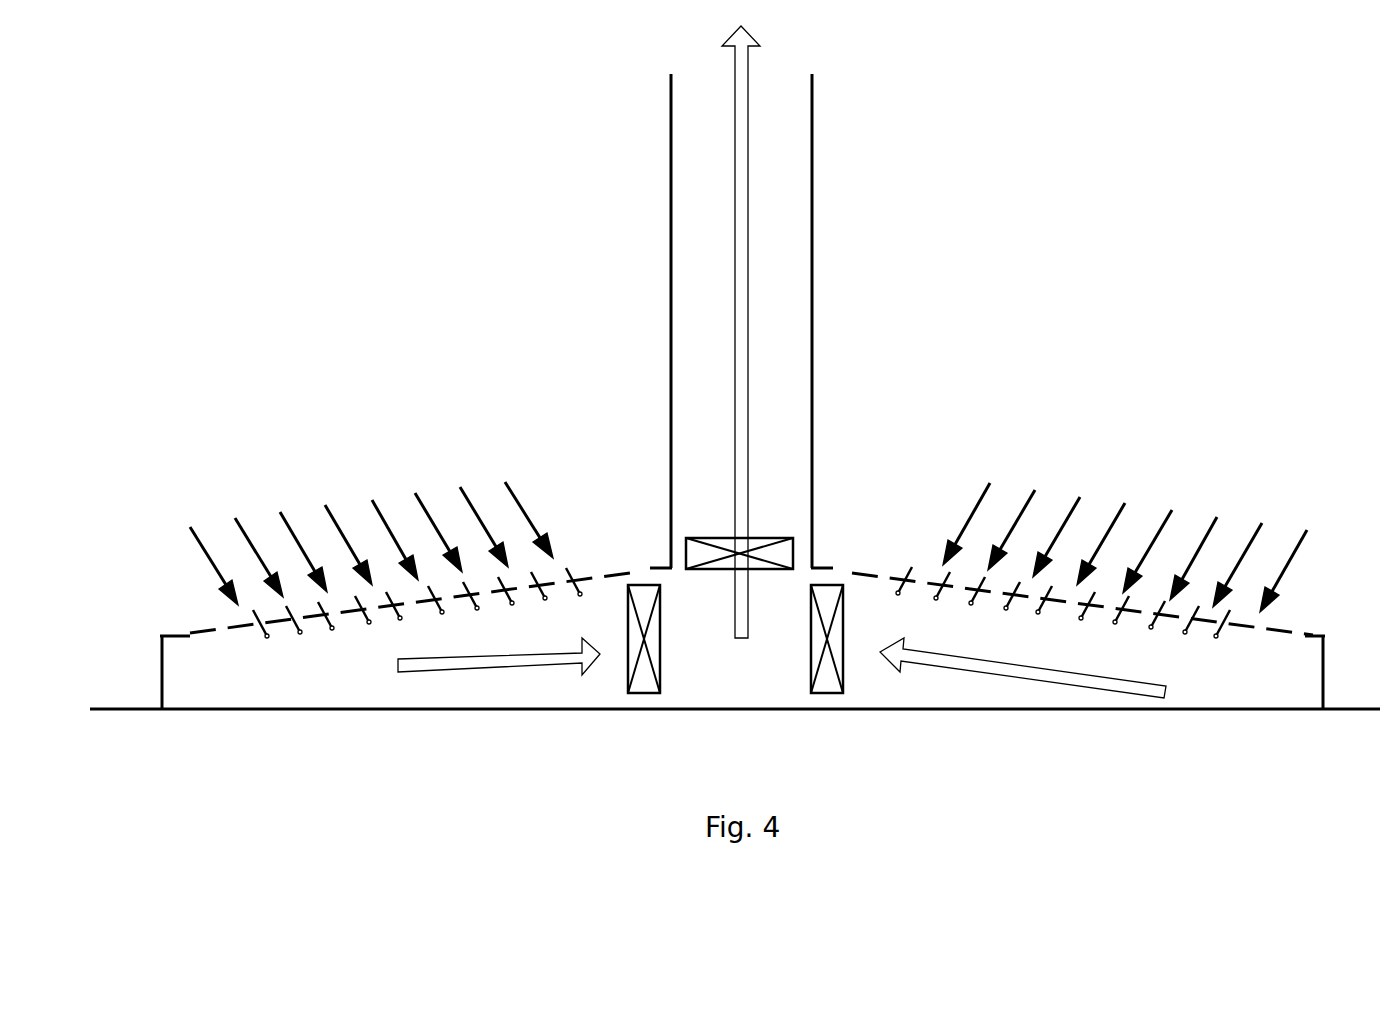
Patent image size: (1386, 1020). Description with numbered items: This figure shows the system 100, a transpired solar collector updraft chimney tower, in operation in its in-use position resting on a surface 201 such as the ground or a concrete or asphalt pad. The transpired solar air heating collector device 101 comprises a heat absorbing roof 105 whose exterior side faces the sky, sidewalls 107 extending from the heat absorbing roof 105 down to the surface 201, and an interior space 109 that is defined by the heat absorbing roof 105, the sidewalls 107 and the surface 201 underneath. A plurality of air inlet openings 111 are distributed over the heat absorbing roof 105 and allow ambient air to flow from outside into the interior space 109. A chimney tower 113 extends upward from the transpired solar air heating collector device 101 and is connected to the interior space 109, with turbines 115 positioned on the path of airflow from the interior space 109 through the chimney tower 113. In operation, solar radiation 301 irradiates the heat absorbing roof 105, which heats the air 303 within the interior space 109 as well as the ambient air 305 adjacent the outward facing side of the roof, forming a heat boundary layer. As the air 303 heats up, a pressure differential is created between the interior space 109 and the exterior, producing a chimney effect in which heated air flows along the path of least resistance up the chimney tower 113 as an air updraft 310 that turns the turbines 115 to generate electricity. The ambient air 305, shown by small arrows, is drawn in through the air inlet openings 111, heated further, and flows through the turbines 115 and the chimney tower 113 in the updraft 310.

The system 100 is at (322, 803).
The transpired solar air heating collector device 101 is at (382, 699).
The heat absorbing roof 105 is at (180, 635).
The sidewalls 107 is at (162, 665).
The interior space 109 is at (346, 668).
The air inlet openings 111 is at (183, 617).
The chimney tower 113 is at (670, 303).
The turbines 115 is at (688, 550).
The surface 201 is at (138, 710).
The solar radiation 301 is at (517, 485).
The air 303 is at (583, 663).
The ambient air 305 is at (570, 566).
The air updraft 310 is at (735, 46).